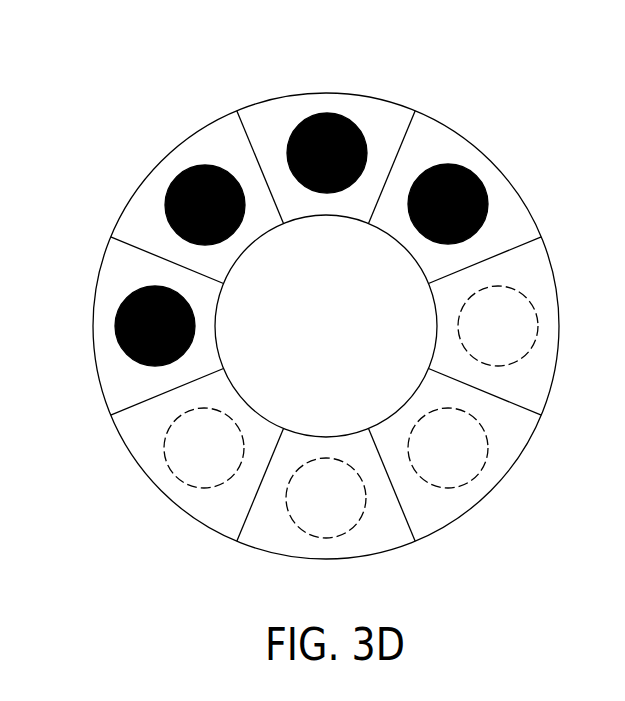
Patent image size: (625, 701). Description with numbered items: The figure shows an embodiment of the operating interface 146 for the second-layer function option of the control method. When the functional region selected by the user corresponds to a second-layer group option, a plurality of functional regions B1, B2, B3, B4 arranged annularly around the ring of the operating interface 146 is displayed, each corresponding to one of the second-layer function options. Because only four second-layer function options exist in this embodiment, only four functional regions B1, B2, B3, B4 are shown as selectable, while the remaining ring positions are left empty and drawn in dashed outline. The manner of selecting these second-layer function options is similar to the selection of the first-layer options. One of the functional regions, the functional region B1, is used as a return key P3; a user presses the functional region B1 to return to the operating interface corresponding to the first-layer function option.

The operating interface 146 is at (298, 286).
The return key P3 is at (120, 375).
The functional region B1 is at (155, 314).
The functional region B2 is at (205, 188).
The functional region B3 is at (340, 152).
The functional region B4 is at (465, 204).